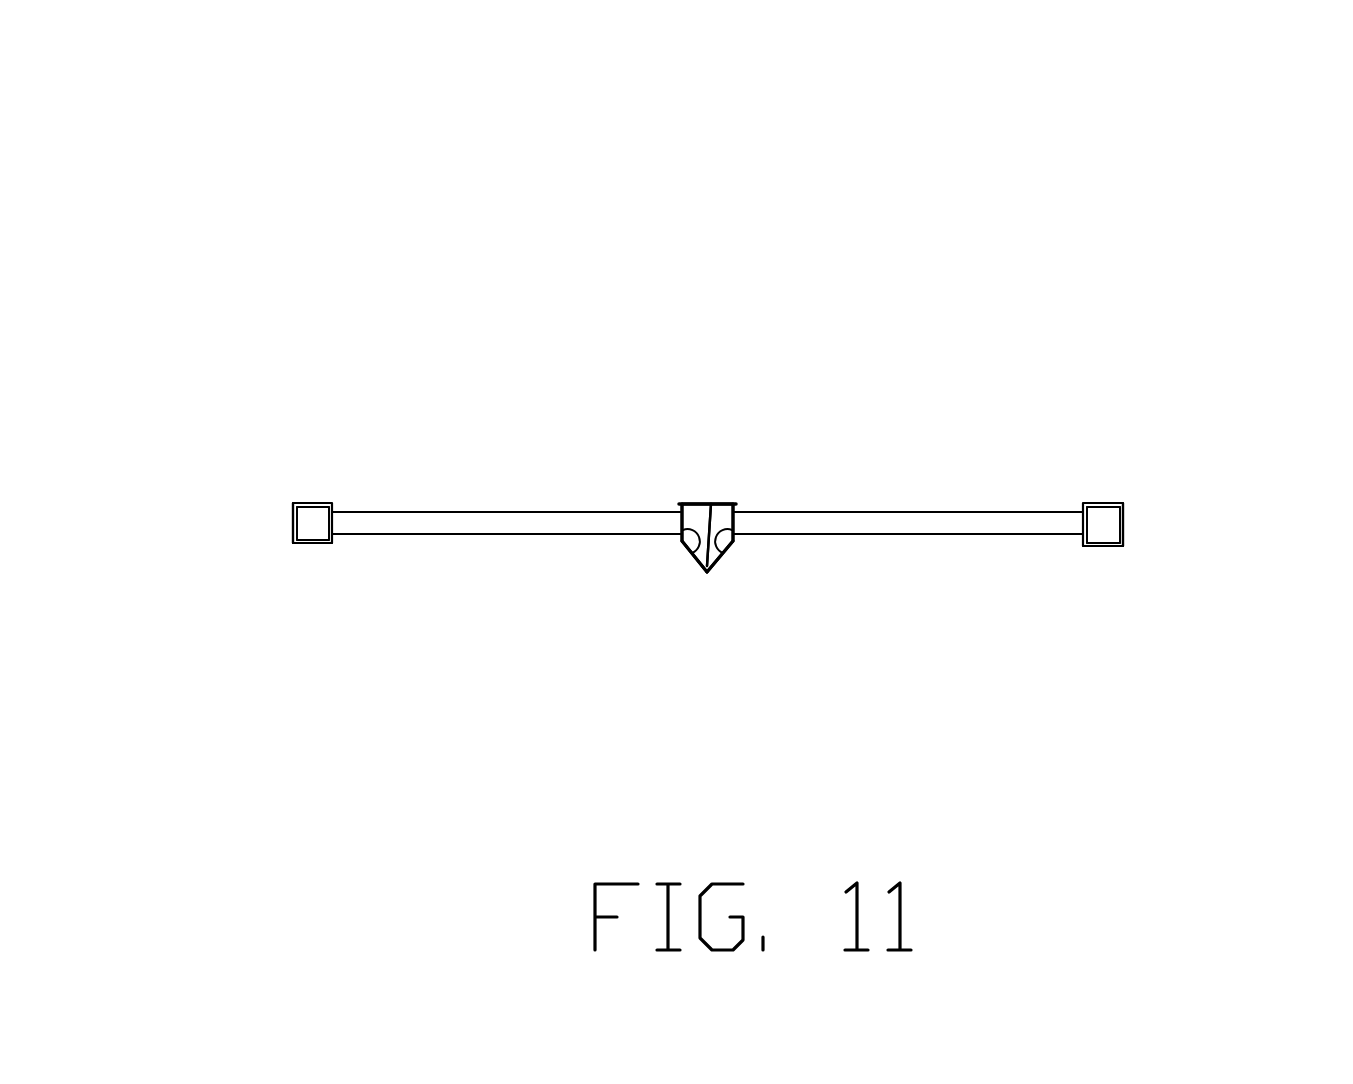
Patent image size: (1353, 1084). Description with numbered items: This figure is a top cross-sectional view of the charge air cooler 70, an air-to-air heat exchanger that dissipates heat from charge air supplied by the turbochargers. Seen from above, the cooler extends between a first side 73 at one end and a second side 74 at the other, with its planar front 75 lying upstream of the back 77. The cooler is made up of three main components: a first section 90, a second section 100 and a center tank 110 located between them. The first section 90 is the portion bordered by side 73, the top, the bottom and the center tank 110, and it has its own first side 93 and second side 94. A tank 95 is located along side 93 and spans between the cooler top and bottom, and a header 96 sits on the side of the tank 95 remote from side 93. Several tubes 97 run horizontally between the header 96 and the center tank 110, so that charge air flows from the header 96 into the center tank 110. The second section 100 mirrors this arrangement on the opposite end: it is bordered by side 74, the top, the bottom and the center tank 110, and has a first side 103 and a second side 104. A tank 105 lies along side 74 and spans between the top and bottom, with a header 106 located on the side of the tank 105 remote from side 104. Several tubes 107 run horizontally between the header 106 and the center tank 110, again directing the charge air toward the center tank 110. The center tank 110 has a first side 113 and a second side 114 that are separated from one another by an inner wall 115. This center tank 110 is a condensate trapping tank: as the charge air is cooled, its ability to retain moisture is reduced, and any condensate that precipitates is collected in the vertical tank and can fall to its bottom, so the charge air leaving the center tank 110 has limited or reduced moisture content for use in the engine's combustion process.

The charge air cooler 70 is at (882, 300).
The first side 73 is at (293, 522).
The second side 74 is at (1108, 531).
The front 75 is at (898, 535).
The back 77 is at (975, 510).
The first section 90 is at (527, 508).
The first side of first section 93 is at (335, 519).
The second side of first section 94 is at (681, 523).
The tank 95 is at (315, 522).
The header 96 is at (328, 536).
The tubes 97 is at (502, 533).
The second section 100 is at (870, 510).
The first side of second section 103 is at (1083, 526).
The second side of second section 104 is at (733, 530).
The tank 105 is at (1103, 528).
The header 106 is at (1083, 537).
The tubes 107 is at (1023, 529).
The center tank 110 is at (700, 505).
The first side of center tank 113 is at (698, 553).
The second side of center tank 114 is at (723, 553).
The inner wall 115 is at (711, 505).